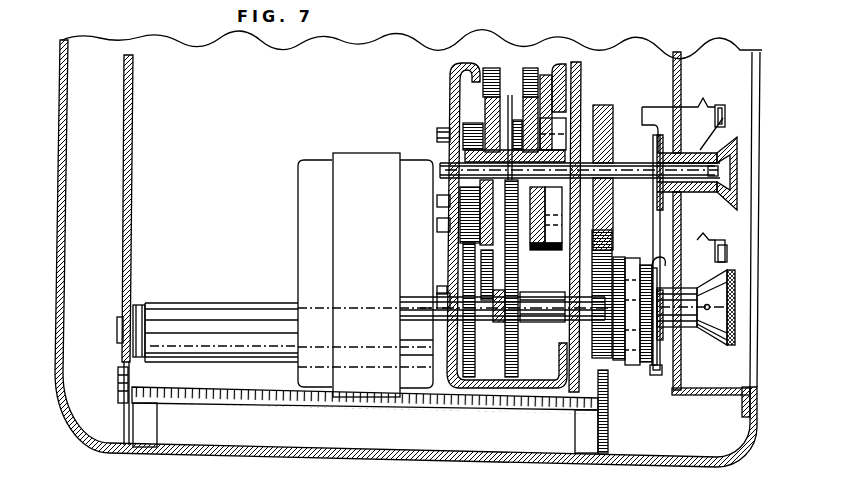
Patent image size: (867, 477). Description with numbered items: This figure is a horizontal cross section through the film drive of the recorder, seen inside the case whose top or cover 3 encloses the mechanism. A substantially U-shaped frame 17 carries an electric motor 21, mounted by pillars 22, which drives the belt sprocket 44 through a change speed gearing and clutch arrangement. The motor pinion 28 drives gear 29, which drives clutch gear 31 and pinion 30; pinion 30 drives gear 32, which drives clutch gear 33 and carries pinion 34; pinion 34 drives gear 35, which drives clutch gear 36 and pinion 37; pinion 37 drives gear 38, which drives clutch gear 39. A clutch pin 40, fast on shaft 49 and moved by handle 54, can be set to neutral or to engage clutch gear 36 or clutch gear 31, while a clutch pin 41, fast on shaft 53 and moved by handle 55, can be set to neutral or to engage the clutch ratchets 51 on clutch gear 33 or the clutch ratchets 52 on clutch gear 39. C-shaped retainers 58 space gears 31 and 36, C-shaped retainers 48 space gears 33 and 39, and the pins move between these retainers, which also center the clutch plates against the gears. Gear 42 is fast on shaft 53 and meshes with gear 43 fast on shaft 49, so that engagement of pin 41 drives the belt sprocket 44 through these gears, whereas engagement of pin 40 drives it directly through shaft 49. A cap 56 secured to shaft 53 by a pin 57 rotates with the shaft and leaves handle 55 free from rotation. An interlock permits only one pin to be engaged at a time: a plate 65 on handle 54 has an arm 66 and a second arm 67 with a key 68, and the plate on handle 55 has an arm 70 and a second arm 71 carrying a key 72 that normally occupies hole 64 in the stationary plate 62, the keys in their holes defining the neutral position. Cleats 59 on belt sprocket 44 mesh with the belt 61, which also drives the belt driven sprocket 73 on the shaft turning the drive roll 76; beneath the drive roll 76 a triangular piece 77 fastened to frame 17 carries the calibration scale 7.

The top or cover 3 is at (60, 147).
The calibration scale 7 is at (256, 400).
The U-shaped frame 17 is at (124, 147).
The electric motor 21 is at (300, 258).
The pillars 22 is at (445, 195).
The motor pinion 28 is at (455, 323).
The gear 29 is at (460, 212).
The pinion 30 is at (490, 273).
The clutch gear 31 is at (468, 378).
The gear 32 is at (490, 68).
The clutch gear 33 is at (496, 103).
The pinion 34 is at (518, 120).
The gear 35 is at (530, 208).
The clutch gear 36 is at (509, 378).
The pinion 37 is at (540, 250).
The gear 38 is at (530, 68).
The clutch gear 39 is at (547, 97).
The clutch pin 40 is at (496, 322).
The clutch pin 41 is at (512, 95).
The gear 42 is at (603, 110).
The gear 43 is at (615, 248).
The belt sprocket 44 is at (650, 342).
The C-shaped retainers 48 is at (437, 133).
The shaft 49 is at (445, 303).
The clutch ratchets 51 is at (472, 130).
The clutch ratchets 52 is at (553, 107).
The shaft 53 is at (452, 160).
The handle 54 is at (736, 302).
The handle 55 is at (718, 151).
The cap 56 is at (731, 178).
The pin 57 is at (735, 166).
The C-shaped retainers 58 is at (496, 300).
The cleats 59 is at (618, 268).
The belt 61 is at (634, 368).
The stationary plate 62 is at (749, 258).
The hole 64 is at (727, 118).
The plate 65 is at (728, 257).
The arm 66 is at (656, 374).
The second arm 67 is at (714, 229).
The key 68 is at (725, 252).
The arm 70 is at (660, 223).
The second arm 71 is at (688, 113).
The key 72 is at (727, 110).
The belt driven sprocket 73 is at (644, 378).
The drive roll 76 is at (222, 318).
The triangular piece 77 is at (213, 370).